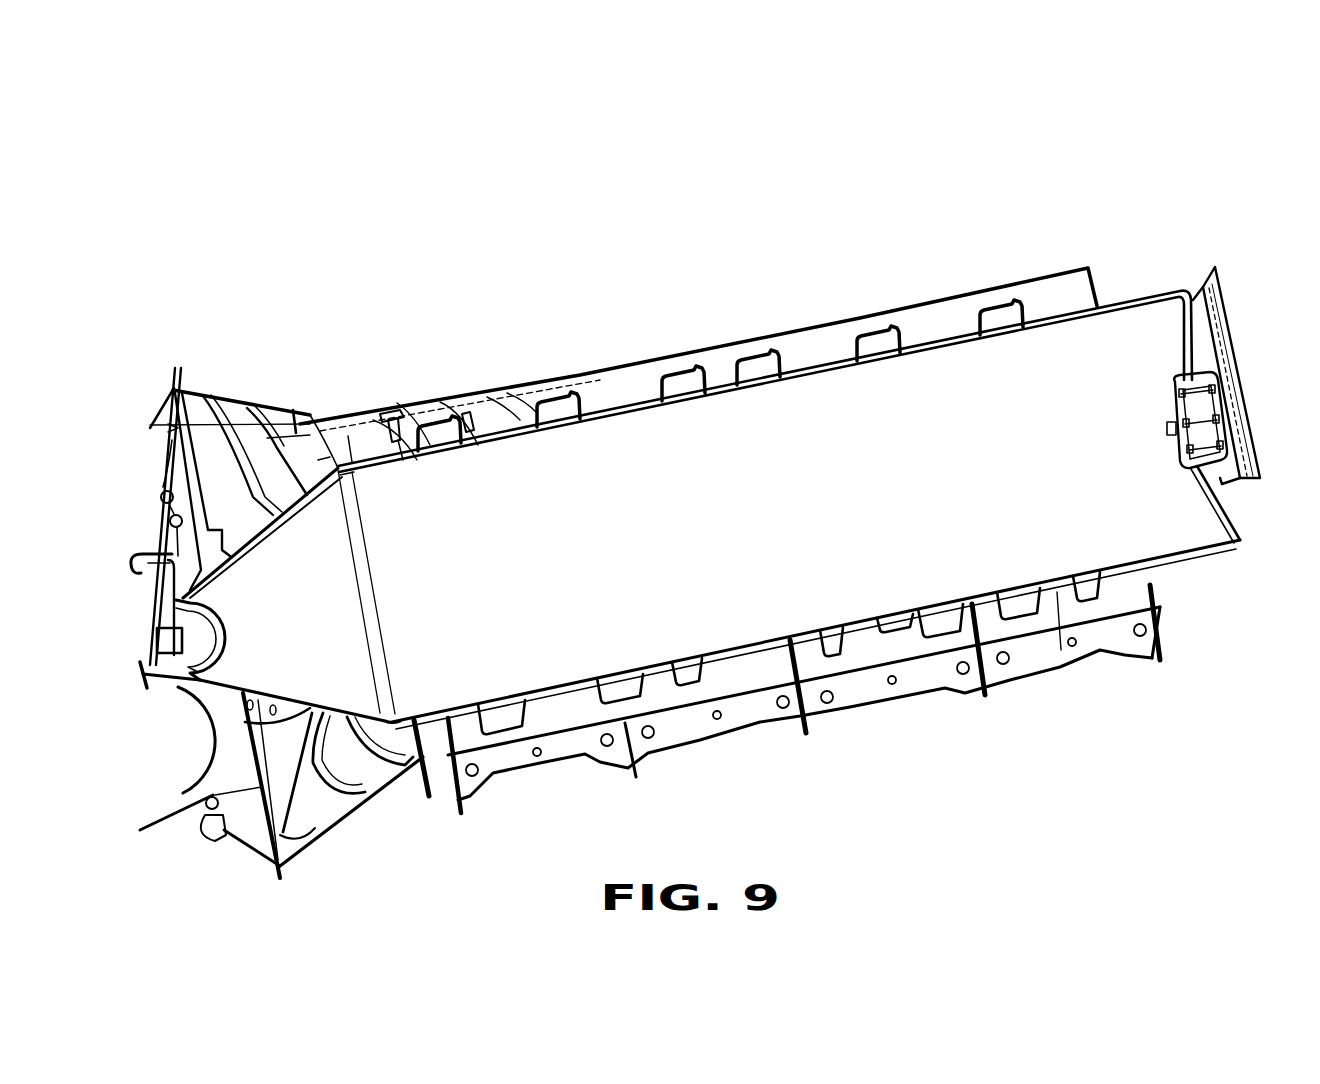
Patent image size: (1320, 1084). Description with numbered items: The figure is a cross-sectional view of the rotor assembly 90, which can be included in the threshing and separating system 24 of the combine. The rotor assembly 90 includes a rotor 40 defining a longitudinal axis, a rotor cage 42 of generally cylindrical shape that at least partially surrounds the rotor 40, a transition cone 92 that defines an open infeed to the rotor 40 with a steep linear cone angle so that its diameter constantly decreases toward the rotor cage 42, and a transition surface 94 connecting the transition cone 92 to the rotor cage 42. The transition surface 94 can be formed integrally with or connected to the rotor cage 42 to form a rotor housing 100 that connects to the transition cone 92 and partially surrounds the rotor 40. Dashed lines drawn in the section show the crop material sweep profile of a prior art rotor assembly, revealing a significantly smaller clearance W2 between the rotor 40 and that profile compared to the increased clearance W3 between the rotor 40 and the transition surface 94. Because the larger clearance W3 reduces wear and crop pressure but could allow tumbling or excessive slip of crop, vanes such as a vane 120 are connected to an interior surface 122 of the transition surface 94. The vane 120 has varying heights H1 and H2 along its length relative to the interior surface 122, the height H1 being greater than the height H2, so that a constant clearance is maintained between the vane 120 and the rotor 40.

The threshing and separating system 24 is at (991, 139).
The rotor assembly 90 is at (862, 208).
The rotor cage 42 is at (1056, 268).
The rotor 40 is at (785, 518).
The transition cone 92 is at (210, 398).
The transition surface 94 is at (402, 410).
The rotor housing 100 is at (503, 333).
The vane 120 is at (393, 418).
The interior surface 122 is at (470, 417).
The height H1 is at (350, 435).
The height H2 is at (402, 442).
The clearance W2 is at (355, 495).
The clearance W3 is at (320, 462).